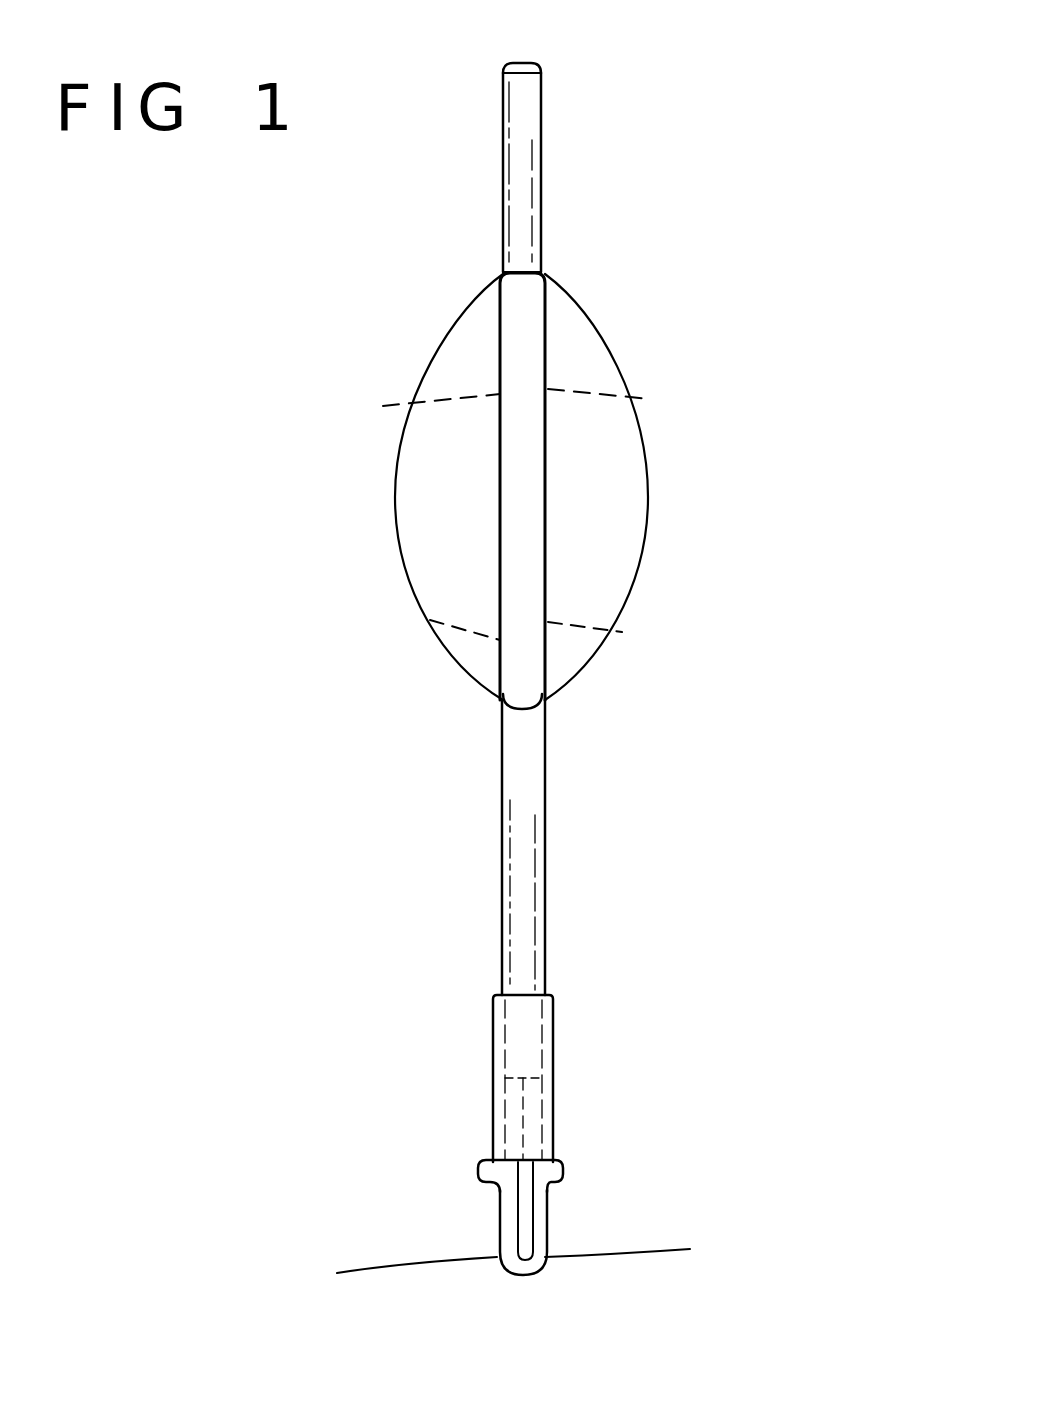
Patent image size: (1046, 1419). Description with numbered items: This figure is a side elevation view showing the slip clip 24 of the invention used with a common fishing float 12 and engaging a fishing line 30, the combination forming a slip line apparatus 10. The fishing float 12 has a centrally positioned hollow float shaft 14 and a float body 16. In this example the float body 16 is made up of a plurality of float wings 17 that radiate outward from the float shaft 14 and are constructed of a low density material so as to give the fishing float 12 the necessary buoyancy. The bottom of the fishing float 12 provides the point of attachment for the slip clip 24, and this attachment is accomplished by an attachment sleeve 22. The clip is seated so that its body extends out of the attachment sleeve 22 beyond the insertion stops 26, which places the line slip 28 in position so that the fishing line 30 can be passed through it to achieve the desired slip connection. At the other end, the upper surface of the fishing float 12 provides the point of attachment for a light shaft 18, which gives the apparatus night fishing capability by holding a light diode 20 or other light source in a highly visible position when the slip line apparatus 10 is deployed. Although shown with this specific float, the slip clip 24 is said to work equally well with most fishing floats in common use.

The slip line apparatus 10 is at (285, 601).
The fishing float 12 is at (449, 863).
The float shaft 14 is at (502, 779).
The float body 16 is at (373, 455).
The float wings 17 is at (500, 343).
The light shaft 18 is at (545, 182).
The light diode 20 is at (545, 63).
The attachment sleeve 22 is at (563, 1042).
The slip clip 24 is at (583, 1197).
The insertion stops 26 is at (472, 1168).
The line slip 28 is at (525, 1235).
The fishing line 30 is at (667, 1256).